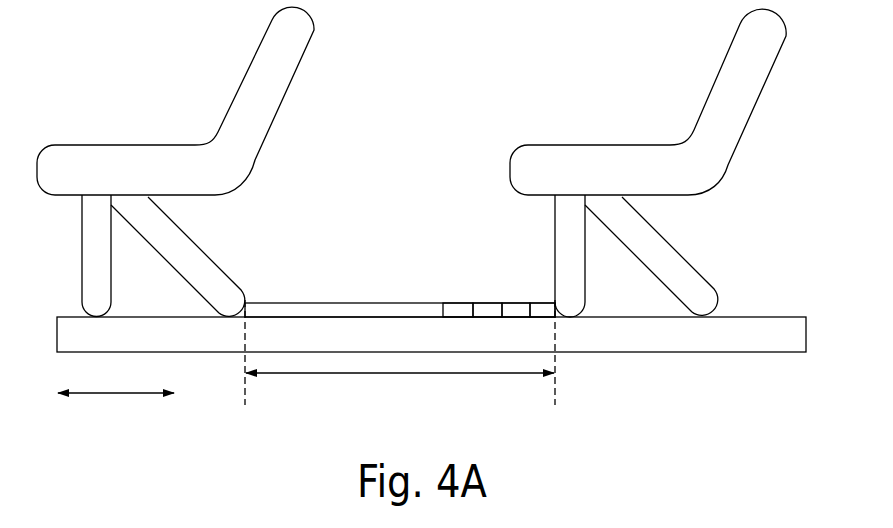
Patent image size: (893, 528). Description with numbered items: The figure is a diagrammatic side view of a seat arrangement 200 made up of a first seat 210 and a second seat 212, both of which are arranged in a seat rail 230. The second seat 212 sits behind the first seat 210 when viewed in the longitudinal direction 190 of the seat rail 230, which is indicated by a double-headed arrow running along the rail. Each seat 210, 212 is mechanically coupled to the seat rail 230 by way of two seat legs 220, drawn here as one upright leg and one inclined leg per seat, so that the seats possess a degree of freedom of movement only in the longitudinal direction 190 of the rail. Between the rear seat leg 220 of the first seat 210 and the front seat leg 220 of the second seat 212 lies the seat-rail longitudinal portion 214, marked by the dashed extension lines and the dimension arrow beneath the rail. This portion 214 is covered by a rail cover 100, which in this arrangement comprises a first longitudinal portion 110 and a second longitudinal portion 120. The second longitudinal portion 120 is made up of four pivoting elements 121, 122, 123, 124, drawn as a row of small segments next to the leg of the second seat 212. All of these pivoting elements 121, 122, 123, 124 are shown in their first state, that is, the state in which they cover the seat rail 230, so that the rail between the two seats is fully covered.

The rail cover 100 is at (400, 208).
The first longitudinal portion 110 is at (280, 303).
The second longitudinal portion 120 is at (453, 208).
The pivoting element 121 is at (463, 300).
The pivoting element 122 is at (493, 302).
The pivoting element 123 is at (518, 302).
The pivoting element 124 is at (542, 302).
The longitudinal direction 190 is at (117, 398).
The seat arrangement 200 is at (406, 160).
The first seat 210 is at (233, 92).
The second seat 212 is at (655, 146).
The seat-rail longitudinal portion 214 is at (402, 375).
The seat leg 220 is at (82, 270).
The seat rail 230 is at (635, 342).